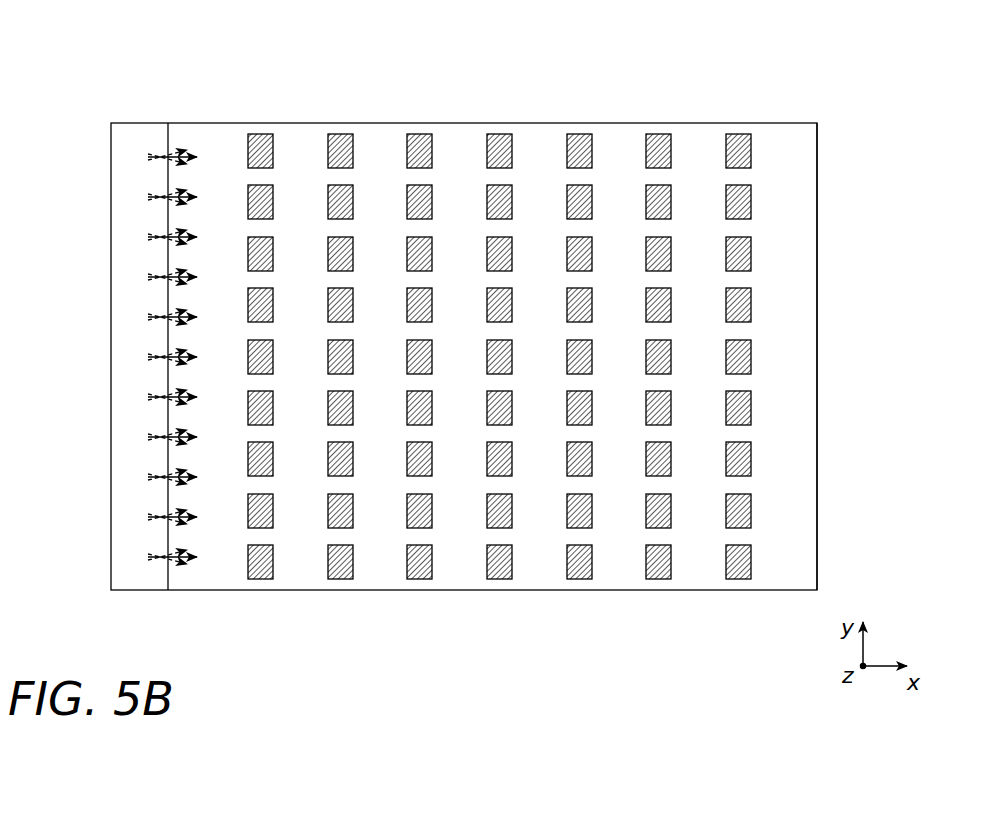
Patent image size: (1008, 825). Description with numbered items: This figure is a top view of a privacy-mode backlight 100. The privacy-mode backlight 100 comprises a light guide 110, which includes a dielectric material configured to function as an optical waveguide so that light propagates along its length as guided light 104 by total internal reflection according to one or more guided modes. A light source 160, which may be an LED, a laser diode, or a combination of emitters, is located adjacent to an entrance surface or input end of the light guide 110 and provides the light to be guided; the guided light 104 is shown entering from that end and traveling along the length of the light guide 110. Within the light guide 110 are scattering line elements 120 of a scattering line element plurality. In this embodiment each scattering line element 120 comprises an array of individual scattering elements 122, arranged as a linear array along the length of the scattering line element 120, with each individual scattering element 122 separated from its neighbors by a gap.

The privacy-mode backlight 100 is at (803, 74).
The guided light 104 is at (178, 128).
The light guide 110 is at (818, 355).
The scattering line elements 120 is at (478, 117).
The individual scattering elements 122 is at (511, 186).
The light source 160 is at (137, 591).